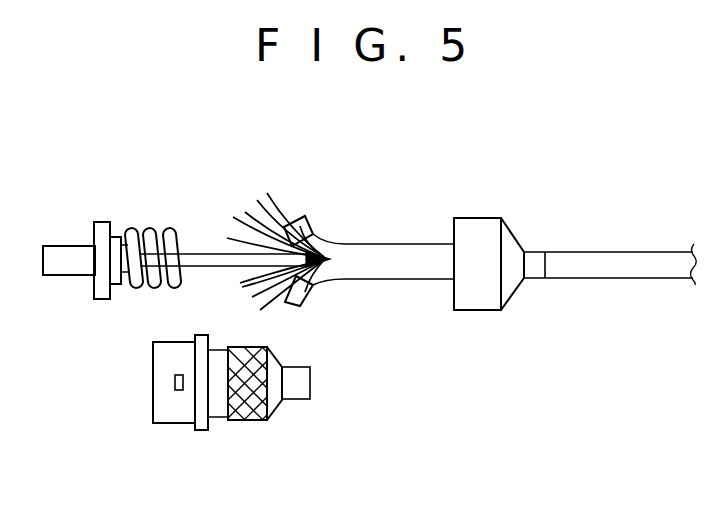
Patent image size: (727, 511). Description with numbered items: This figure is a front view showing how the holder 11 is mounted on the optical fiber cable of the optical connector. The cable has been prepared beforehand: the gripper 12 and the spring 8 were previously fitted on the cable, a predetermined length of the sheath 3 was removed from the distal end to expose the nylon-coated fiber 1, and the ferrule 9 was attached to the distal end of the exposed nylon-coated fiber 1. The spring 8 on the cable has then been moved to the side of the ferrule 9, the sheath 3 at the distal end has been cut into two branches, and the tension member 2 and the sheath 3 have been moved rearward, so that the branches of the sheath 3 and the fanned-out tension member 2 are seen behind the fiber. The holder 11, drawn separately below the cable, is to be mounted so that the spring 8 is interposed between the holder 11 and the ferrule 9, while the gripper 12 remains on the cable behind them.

The nylon-coated fiber 1 is at (204, 252).
The tension member 2 is at (254, 207).
The sheath 3 is at (312, 235).
The spring 8 is at (150, 238).
The ferrule 9 is at (70, 256).
The holder 11 is at (177, 418).
The gripper 12 is at (474, 232).